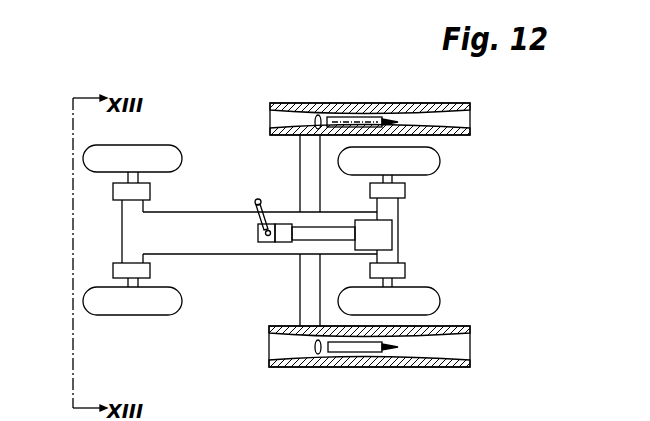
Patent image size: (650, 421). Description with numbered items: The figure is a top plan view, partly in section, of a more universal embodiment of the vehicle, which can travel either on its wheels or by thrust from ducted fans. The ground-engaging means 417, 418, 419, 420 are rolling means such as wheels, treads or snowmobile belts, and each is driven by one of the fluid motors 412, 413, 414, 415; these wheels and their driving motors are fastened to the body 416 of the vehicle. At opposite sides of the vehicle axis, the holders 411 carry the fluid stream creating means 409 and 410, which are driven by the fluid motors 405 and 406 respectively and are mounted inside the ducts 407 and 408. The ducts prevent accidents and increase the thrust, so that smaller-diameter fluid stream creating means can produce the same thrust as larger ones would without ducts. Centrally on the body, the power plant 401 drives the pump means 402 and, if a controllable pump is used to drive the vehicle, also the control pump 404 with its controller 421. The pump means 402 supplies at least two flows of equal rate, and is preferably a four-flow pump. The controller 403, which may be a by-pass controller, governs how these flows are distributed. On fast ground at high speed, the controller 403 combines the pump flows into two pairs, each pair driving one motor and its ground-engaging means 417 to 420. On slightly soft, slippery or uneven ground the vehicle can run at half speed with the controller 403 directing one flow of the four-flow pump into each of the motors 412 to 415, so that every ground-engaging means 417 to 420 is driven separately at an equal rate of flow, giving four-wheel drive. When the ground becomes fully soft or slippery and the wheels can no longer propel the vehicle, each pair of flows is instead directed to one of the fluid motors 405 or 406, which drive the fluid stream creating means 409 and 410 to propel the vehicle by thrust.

The power plant 401 is at (383, 240).
The pump means 402 is at (298, 242).
The controller 403 is at (280, 243).
The control pump 404 is at (265, 241).
The fluid motor 405 is at (358, 117).
The fluid motor 406 is at (357, 352).
The duct 407 is at (455, 123).
The duct 408 is at (457, 342).
The fluid stream creating means 409 is at (318, 113).
The fluid stream creating means 410 is at (320, 355).
The holders 411 is at (300, 177).
The fluid motor 412 is at (398, 190).
The fluid motor 413 is at (398, 270).
The fluid motor 414 is at (150, 271).
The fluid motor 415 is at (150, 191).
The body 416 is at (208, 226).
The ground-engaging means 417 is at (165, 157).
The ground-engaging means 418 is at (97, 307).
The ground-engaging means 419 is at (427, 302).
The ground-engaging means 420 is at (427, 160).
The controller 421 is at (257, 199).